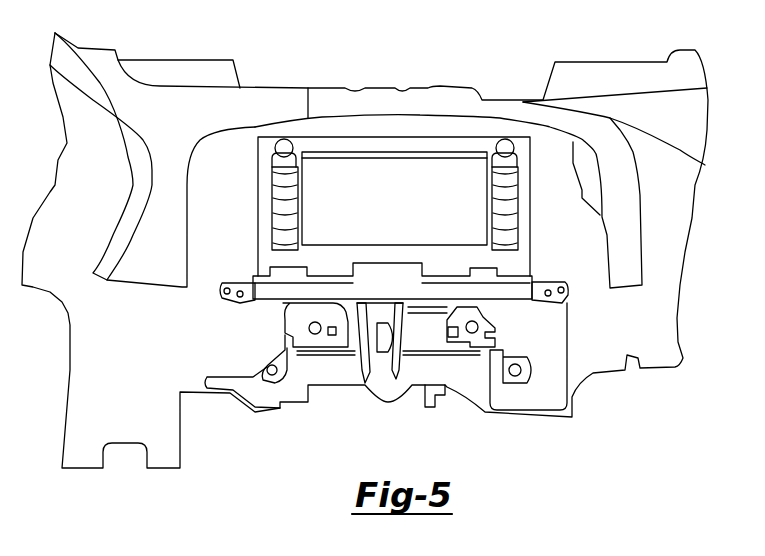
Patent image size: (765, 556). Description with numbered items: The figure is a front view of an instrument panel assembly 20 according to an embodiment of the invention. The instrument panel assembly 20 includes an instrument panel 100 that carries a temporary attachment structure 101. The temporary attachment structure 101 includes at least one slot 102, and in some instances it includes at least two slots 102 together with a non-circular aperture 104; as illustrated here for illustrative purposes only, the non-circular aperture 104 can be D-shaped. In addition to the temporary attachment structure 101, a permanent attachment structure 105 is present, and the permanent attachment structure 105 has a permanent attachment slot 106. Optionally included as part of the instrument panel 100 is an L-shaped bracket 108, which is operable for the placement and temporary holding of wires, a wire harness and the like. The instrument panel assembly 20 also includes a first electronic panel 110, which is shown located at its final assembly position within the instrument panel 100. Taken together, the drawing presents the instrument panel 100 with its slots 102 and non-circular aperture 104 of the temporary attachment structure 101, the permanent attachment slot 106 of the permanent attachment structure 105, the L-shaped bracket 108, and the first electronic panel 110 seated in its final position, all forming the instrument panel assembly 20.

The instrument panel assembly 20 is at (407, 73).
The instrument panel 100 is at (178, 70).
The temporary attachment structure 101 is at (360, 400).
The slot 102 is at (338, 276).
The non-circular aperture 104 is at (392, 282).
The permanent attachment structure 105 is at (323, 338).
The permanent attachment slot 106 is at (297, 320).
The L-shaped bracket 108 is at (437, 408).
The first electronic panel 110 is at (406, 209).